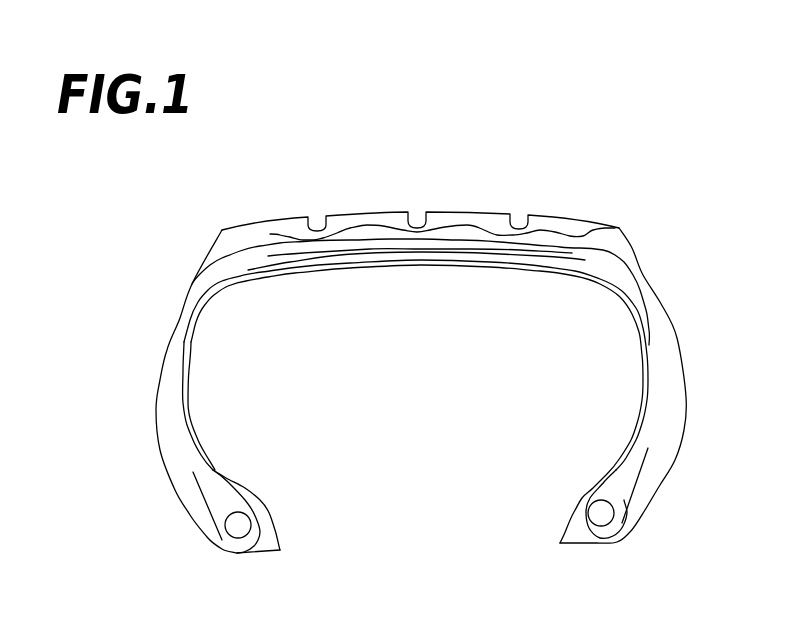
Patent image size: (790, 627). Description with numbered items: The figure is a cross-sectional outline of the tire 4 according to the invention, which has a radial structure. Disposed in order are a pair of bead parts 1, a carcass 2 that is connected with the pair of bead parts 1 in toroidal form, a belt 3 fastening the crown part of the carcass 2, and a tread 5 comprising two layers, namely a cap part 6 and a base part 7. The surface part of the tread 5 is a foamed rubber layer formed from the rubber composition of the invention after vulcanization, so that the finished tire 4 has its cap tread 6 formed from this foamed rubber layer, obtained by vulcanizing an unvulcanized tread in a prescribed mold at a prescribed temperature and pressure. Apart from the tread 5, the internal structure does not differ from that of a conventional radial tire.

The bead parts 1 is at (242, 530).
The carcass 2 is at (217, 472).
The belt 3 is at (278, 256).
The tire 4 is at (558, 189).
The tread 5 is at (371, 232).
The cap part 6 is at (622, 245).
The base part 7 is at (583, 246).